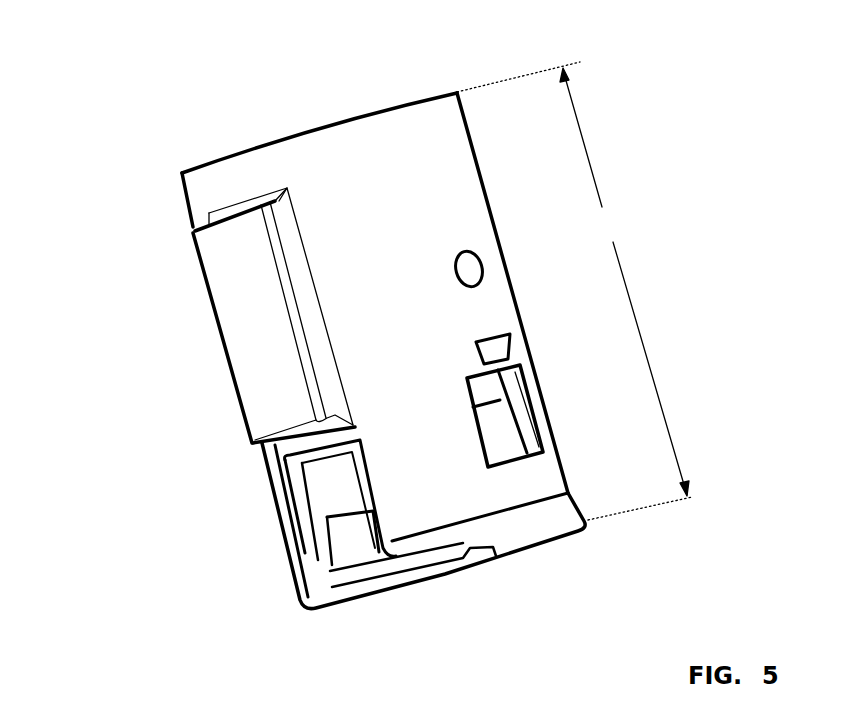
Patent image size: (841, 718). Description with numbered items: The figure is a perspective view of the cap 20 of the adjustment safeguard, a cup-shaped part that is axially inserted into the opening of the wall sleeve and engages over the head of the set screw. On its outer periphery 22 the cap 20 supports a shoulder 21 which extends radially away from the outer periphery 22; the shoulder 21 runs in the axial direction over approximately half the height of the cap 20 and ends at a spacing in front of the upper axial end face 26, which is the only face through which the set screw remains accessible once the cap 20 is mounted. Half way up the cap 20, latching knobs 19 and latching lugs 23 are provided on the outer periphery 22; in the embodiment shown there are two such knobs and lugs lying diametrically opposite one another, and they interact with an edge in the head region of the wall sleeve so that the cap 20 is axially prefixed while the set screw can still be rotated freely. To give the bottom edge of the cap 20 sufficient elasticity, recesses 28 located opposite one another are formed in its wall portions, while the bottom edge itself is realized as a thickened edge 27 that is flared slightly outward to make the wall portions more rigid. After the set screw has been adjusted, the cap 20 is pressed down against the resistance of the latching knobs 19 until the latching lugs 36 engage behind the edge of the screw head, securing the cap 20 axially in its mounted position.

The latching knob 19 is at (469, 268).
The cap 20 is at (145, 163).
The shoulder 21 is at (243, 342).
The outer periphery 22 is at (388, 200).
The latching lug 23 is at (498, 345).
The axial end face 26 is at (314, 128).
The thickened edge 27 is at (452, 538).
The recess 28 is at (300, 498).
The latching lug 36 is at (350, 535).